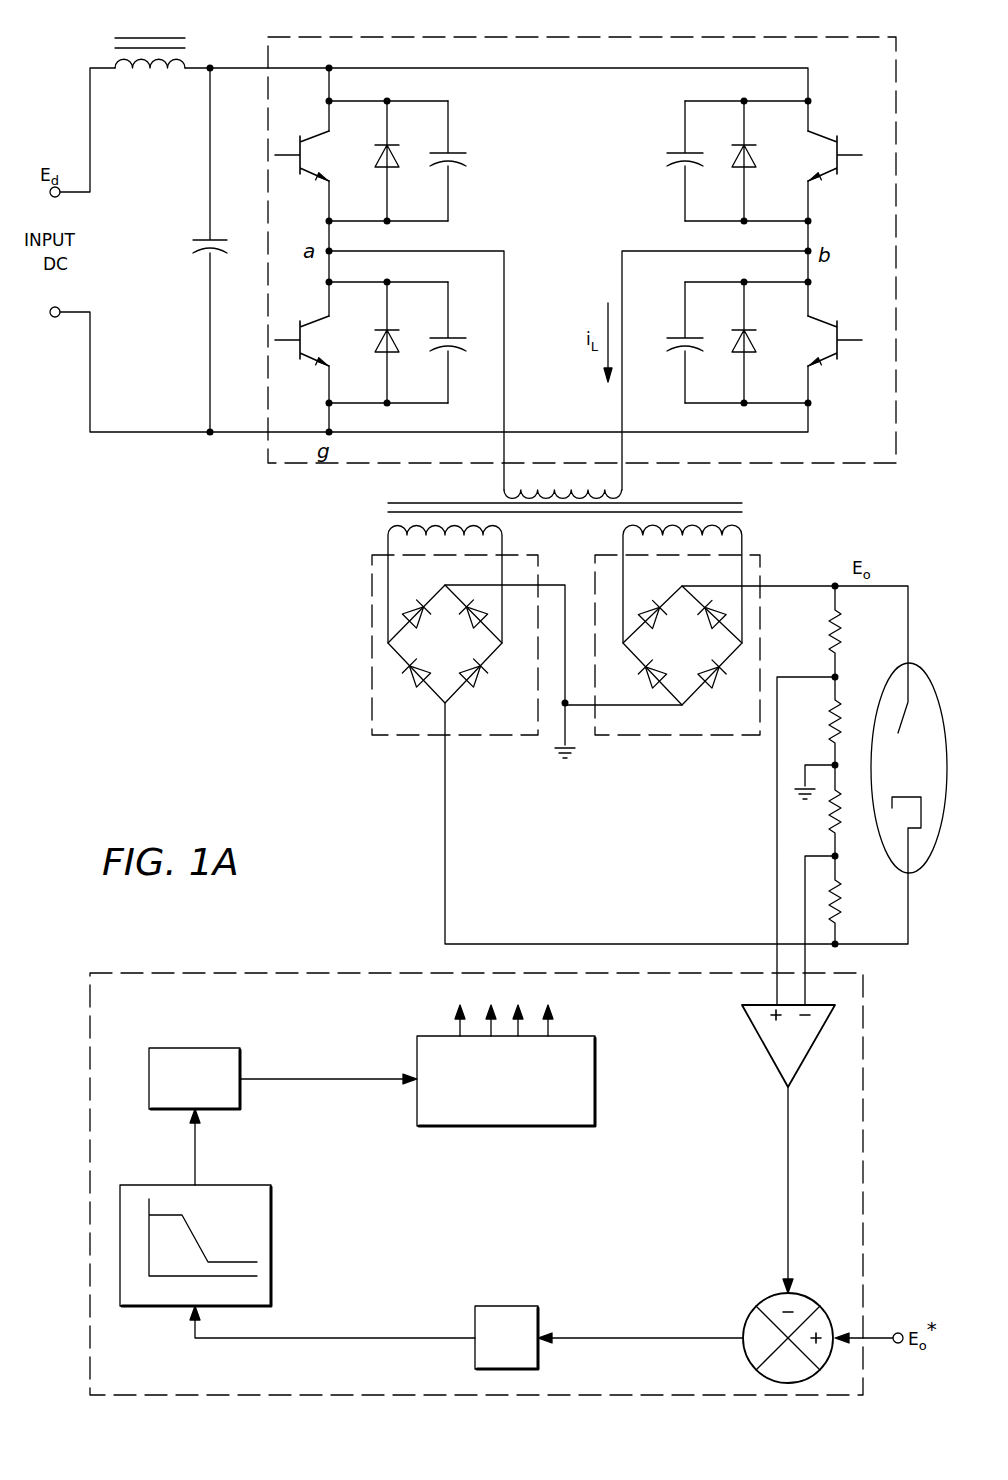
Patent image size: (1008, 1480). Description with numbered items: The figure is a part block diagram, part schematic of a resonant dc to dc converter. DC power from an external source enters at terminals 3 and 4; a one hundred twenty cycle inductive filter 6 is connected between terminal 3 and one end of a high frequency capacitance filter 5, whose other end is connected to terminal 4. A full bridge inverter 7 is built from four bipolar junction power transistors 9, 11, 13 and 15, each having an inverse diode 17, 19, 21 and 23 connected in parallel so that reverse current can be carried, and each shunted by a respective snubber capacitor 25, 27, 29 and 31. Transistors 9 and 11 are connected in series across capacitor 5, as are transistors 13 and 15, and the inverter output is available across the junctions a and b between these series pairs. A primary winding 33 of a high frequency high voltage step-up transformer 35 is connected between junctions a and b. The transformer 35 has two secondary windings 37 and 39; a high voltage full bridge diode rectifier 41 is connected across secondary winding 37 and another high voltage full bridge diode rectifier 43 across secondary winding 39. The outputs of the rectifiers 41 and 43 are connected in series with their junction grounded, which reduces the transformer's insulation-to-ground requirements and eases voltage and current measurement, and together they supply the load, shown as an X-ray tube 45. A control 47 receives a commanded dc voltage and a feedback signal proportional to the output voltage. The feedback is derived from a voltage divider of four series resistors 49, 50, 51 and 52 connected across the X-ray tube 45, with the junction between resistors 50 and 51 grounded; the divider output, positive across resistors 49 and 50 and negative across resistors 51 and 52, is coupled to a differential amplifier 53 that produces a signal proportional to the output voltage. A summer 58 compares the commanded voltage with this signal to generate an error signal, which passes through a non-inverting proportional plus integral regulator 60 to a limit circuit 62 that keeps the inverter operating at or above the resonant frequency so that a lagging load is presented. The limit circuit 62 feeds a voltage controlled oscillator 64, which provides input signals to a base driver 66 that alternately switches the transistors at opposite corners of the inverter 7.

The terminal 3 is at (48, 190).
The terminal 4 is at (48, 315).
The high frequency capacitance filter 5 is at (197, 238).
The 120 cycle inductive filter 6 is at (150, 82).
The full bridge inverter 7 is at (896, 100).
The bipolar junction power transistor 9 is at (312, 128).
The bipolar junction power transistor 11 is at (312, 320).
The bipolar junction power transistor 13 is at (818, 128).
The bipolar junction power transistor 15 is at (820, 322).
The inverse diode 17 is at (389, 156).
The inverse diode 19 is at (393, 334).
The inverse diode 21 is at (748, 156).
The inverse diode 23 is at (750, 336).
The snubber capacitor 25 is at (452, 152).
The snubber capacitor 27 is at (452, 336).
The snubber capacitor 29 is at (676, 152).
The snubber capacitor 31 is at (694, 336).
The primary winding 33 is at (622, 497).
The high frequency high voltage step-up transformer 35 is at (760, 506).
The secondary winding 37 is at (388, 532).
The secondary winding 39 is at (742, 535).
The high voltage full bridge diode rectifier 41 is at (372, 660).
The high voltage full bridge diode rectifier 43 is at (652, 736).
The X-ray tube 45 is at (900, 704).
The control 47 is at (863, 1065).
The resistor 49 is at (825, 642).
The resistor 50 is at (838, 722).
The resistor 51 is at (838, 814).
The resistor 52 is at (844, 906).
The differential amplifier 53 is at (752, 1028).
The summer 58 is at (770, 1297).
The proportional plus integral regulator 60 is at (498, 1306).
The limit circuit 62 is at (271, 1256).
The voltage controlled oscillator 64 is at (180, 1048).
The base driver 66 is at (417, 1052).